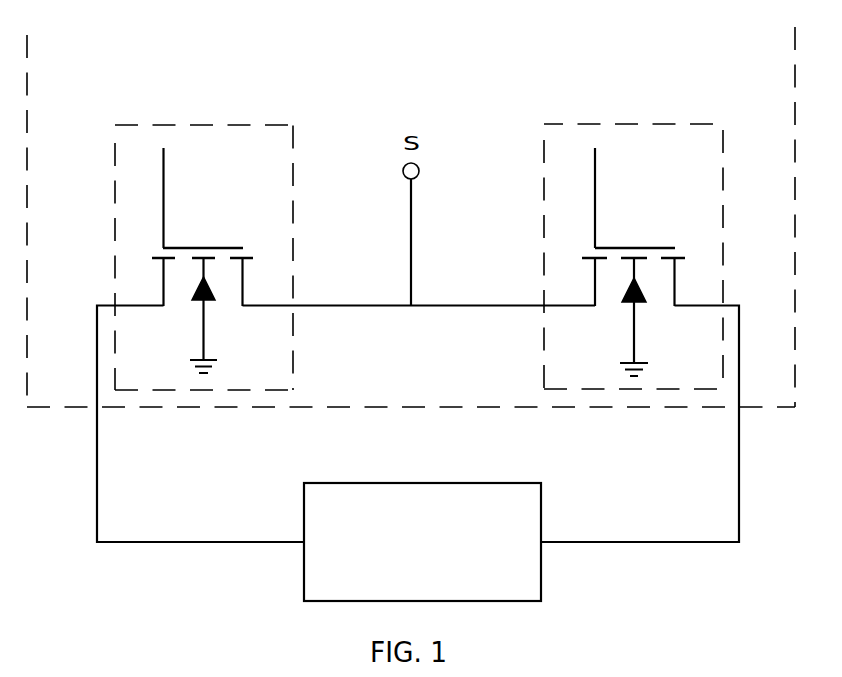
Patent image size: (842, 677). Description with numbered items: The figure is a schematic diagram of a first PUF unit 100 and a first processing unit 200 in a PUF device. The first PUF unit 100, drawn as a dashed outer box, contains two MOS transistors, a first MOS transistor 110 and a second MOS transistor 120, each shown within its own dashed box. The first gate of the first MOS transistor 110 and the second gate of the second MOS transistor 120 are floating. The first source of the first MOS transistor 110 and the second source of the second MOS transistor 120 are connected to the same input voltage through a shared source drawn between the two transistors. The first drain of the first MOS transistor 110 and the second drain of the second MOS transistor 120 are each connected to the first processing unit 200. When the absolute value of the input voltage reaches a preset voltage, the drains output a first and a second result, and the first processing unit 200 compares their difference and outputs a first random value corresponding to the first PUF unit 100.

The first PUF unit 100 is at (411, 217).
The first MOS transistor 110 is at (322, 113).
The second MOS transistor 120 is at (562, 157).
The first processing unit 200 is at (422, 542).